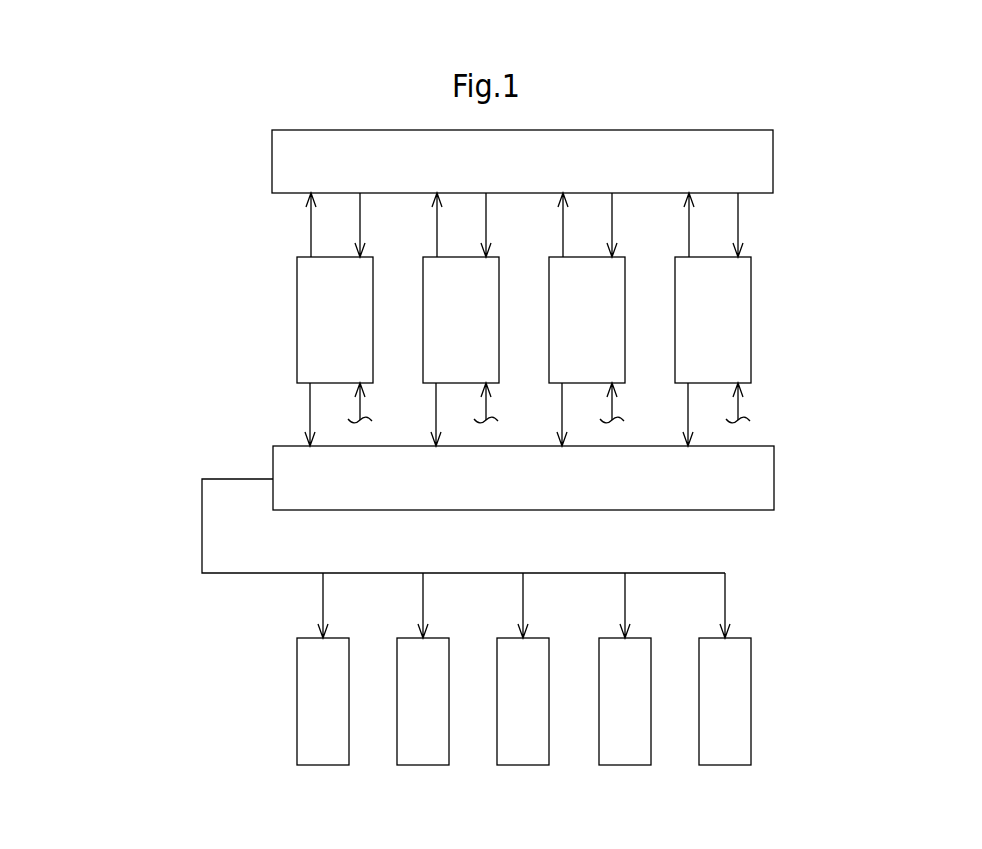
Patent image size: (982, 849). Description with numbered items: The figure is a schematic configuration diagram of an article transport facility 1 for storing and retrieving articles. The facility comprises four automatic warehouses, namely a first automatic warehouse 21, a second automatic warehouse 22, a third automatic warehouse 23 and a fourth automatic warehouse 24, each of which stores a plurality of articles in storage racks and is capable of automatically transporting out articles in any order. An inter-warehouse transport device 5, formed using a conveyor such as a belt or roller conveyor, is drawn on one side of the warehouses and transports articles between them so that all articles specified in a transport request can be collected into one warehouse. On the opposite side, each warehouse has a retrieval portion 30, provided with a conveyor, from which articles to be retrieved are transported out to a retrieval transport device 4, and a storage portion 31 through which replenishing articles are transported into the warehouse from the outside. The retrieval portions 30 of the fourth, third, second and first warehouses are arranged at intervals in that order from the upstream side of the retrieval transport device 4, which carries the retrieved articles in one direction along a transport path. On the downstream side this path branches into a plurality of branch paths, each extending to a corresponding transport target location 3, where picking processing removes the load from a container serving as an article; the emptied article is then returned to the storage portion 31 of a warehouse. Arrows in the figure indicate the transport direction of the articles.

The article transport facility 1 is at (218, 172).
The transport target location 3 is at (323, 765).
The retrieval transport device 4 is at (774, 479).
The inter-warehouse transport device 5 is at (773, 157).
The first automatic warehouse 21 is at (297, 345).
The second automatic warehouse 22 is at (423, 345).
The third automatic warehouse 23 is at (549, 345).
The fourth automatic warehouse 24 is at (675, 345).
The retrieval portion 30 is at (308, 411).
The storage portion 31 is at (364, 410).